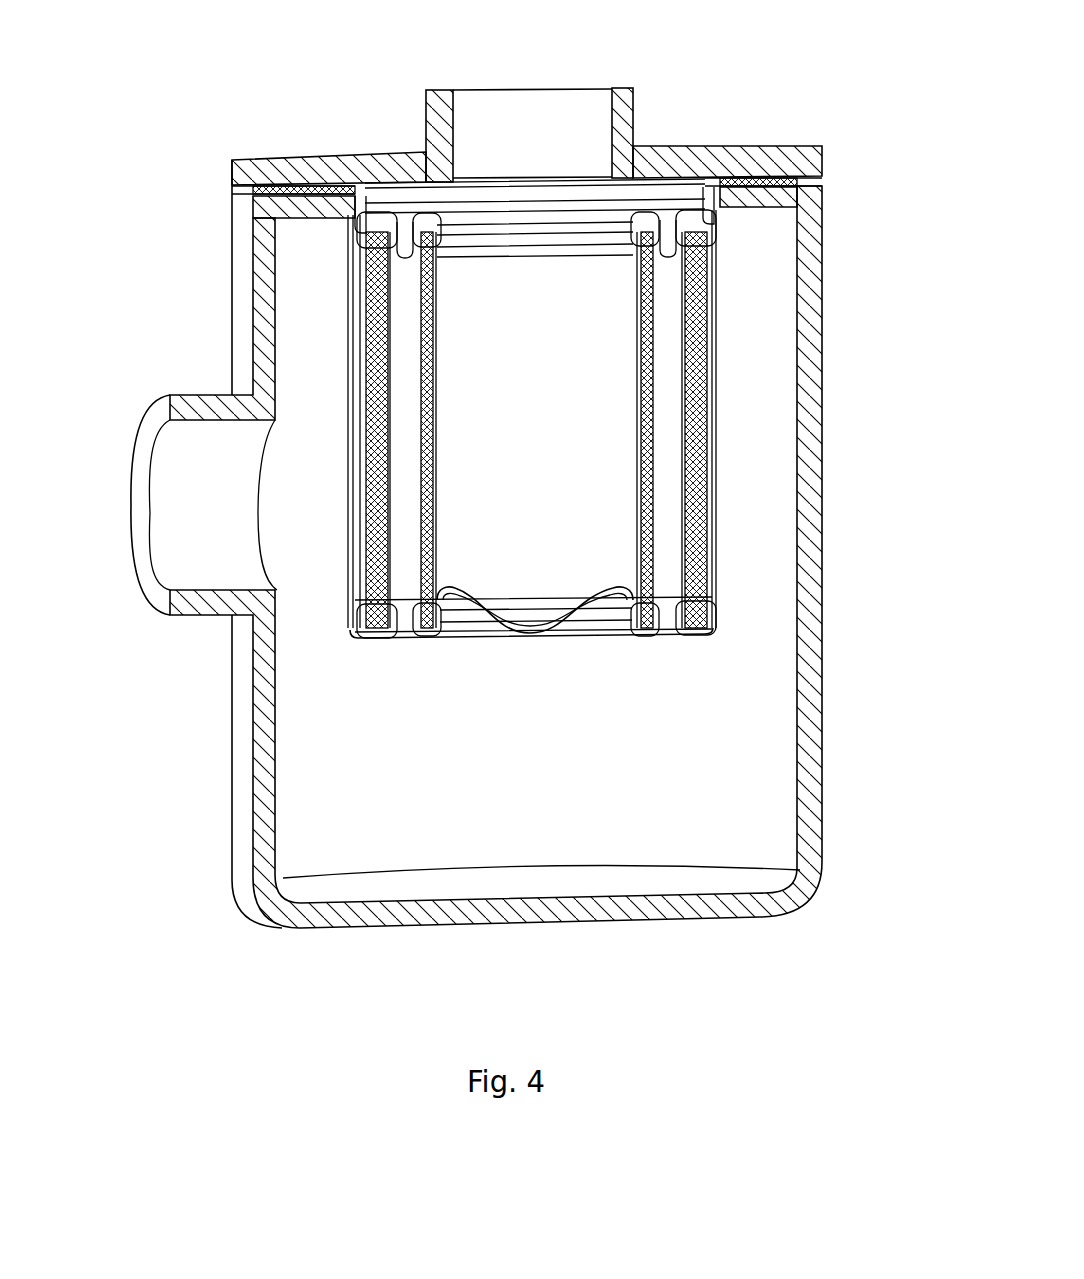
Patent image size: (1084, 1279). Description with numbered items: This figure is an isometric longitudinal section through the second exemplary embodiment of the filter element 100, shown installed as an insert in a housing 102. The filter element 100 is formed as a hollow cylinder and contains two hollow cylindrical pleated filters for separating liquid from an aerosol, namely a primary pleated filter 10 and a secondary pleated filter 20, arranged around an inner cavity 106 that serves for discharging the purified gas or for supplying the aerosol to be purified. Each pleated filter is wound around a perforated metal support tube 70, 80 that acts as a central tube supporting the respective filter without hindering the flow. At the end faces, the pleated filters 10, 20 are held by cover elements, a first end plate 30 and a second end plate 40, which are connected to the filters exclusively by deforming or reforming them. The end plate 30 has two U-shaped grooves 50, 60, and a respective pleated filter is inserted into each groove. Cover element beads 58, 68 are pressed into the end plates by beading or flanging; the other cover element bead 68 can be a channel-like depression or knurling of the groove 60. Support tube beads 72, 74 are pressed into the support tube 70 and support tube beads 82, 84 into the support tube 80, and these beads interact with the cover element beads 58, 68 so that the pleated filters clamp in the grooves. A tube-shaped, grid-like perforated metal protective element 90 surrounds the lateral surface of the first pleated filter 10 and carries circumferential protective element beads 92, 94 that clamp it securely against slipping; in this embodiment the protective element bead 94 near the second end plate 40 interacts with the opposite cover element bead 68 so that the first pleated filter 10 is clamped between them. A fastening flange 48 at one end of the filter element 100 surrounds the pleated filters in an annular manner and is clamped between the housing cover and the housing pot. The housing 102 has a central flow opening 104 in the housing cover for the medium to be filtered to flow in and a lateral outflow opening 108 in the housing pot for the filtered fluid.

The primary pleated filter 10 is at (698, 420).
The secondary pleated filter 20 is at (641, 416).
The first end plate 30 is at (527, 637).
The second end plate 40 is at (567, 212).
The fastening flange 48 is at (310, 190).
The first U-shaped groove 50 is at (701, 607).
The cover element bead 58 is at (413, 622).
The second U-shaped groove 60 is at (648, 254).
The cover element bead 68 is at (412, 238).
The support tube 70 is at (686, 451).
The support tube bead 72 is at (668, 624).
The support tube bead 74 is at (668, 230).
The support tube 80 is at (638, 460).
The support tube bead 82 is at (441, 618).
The support tube bead 84 is at (441, 242).
The protective element 90 is at (716, 376).
The protective element bead 92 is at (712, 611).
The protective element bead 94 is at (713, 225).
The filter element 100 is at (712, 297).
The housing 102 is at (822, 512).
The central flow opening 104 is at (158, 502).
The inner cavity 106 is at (513, 359).
The lateral outflow opening 108 is at (525, 104).